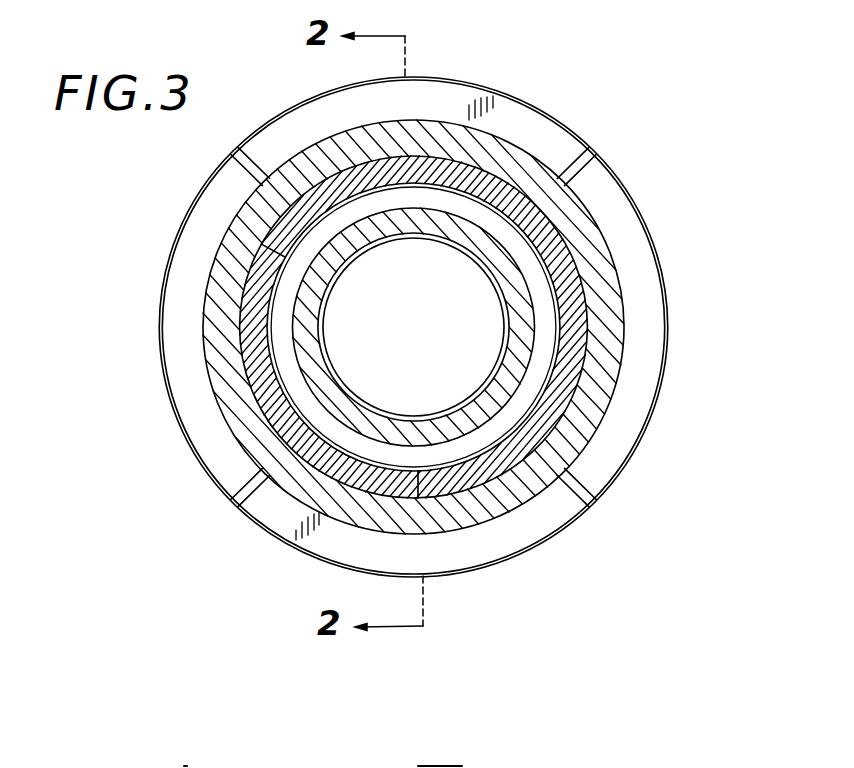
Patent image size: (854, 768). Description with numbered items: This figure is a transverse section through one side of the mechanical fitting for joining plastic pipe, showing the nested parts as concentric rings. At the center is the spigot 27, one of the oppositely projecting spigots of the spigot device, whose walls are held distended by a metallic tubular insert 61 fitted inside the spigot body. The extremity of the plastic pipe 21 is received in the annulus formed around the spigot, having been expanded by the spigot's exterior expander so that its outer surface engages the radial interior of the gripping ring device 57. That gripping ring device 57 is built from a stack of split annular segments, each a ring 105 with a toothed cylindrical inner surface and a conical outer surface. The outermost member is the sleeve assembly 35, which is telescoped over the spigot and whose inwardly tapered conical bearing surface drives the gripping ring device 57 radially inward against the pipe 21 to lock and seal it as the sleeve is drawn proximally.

The sleeve assembly 35 is at (505, 80).
The gripping ring device 57 is at (596, 302).
The annular segment 105 is at (580, 265).
The plastic pipe 21 is at (576, 362).
The metallic tubular insert 61 is at (494, 293).
The spigot 27 is at (468, 254).